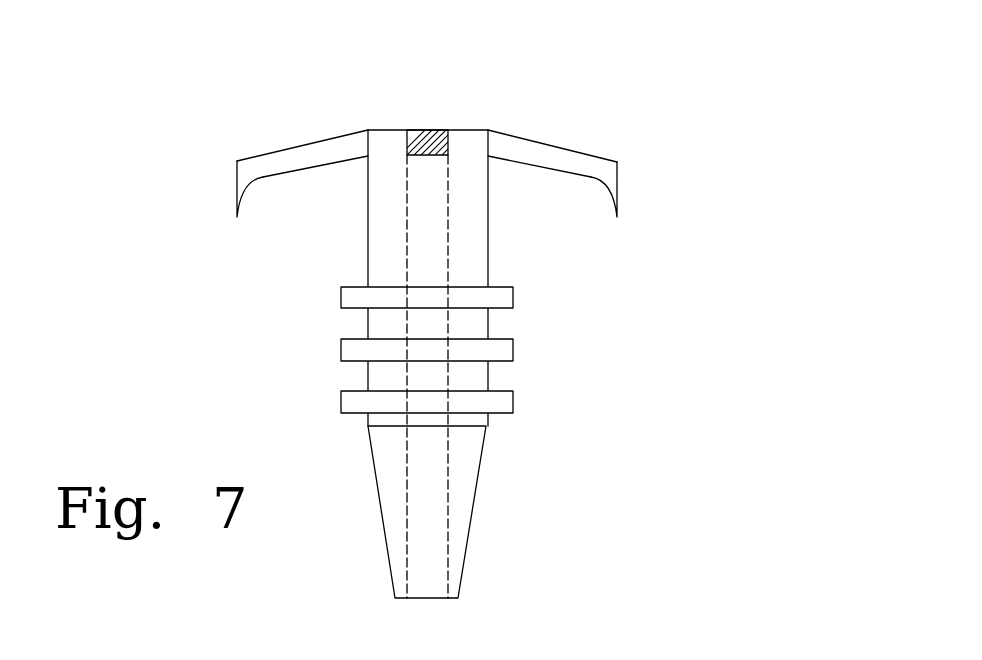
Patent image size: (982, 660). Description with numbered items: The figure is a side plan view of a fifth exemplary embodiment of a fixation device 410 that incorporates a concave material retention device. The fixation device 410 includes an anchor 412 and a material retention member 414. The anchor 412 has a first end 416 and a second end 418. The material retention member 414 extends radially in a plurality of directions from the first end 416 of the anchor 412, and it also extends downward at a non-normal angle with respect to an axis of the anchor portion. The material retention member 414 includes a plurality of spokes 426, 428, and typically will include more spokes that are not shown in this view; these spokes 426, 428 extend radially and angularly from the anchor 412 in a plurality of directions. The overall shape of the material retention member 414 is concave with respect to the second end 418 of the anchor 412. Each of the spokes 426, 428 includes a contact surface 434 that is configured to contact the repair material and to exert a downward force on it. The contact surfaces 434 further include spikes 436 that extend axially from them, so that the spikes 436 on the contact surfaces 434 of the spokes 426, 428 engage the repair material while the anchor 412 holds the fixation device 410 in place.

The fixation device 410 is at (690, 78).
The anchor 412 is at (570, 388).
The material retention member 414 is at (655, 160).
The first end 416 is at (463, 130).
The second end 418 is at (395, 598).
The spoke 426 is at (313, 143).
The spoke 428 is at (542, 142).
The contact surface 434 is at (302, 172).
The spike 436 is at (237, 190).